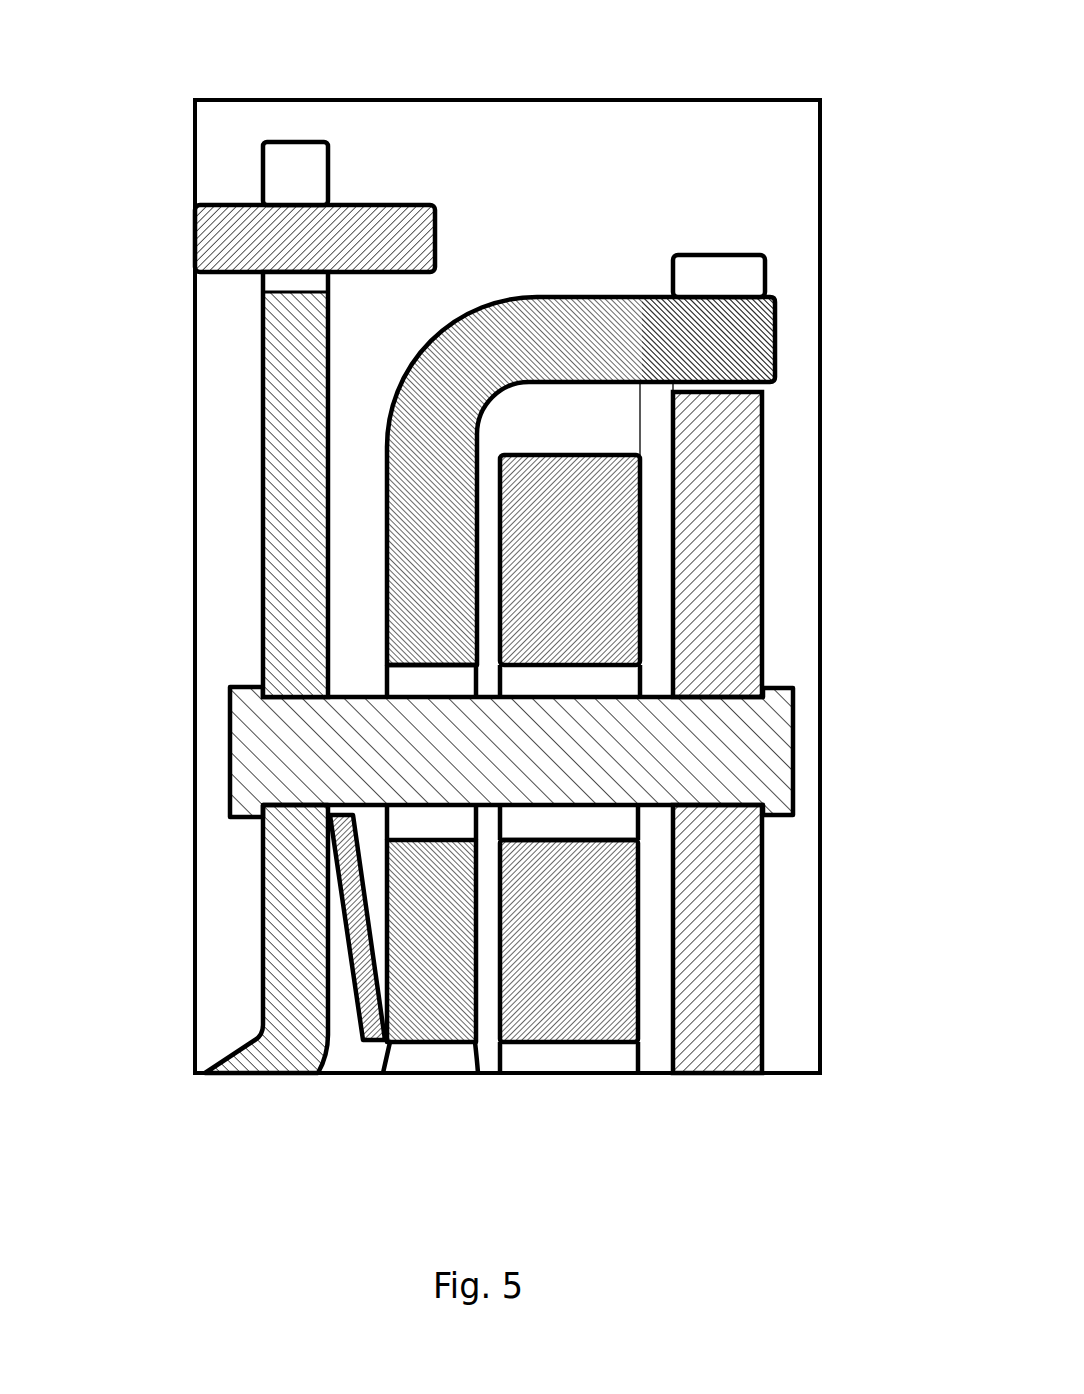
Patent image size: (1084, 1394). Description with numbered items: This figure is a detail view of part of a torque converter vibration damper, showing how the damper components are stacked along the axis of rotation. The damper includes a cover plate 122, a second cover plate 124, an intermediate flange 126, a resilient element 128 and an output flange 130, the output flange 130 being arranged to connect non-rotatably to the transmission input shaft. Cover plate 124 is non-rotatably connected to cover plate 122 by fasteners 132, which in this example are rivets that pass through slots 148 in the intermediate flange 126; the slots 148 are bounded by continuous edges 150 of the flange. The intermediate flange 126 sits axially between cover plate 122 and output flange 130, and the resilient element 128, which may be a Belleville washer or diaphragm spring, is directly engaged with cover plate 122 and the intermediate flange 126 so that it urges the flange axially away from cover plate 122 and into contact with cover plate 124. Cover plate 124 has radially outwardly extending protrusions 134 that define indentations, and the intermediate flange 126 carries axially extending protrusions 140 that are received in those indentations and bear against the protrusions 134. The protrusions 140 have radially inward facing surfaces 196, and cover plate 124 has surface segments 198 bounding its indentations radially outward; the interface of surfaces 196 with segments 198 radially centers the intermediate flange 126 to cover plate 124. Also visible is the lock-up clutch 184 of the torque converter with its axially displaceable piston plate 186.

The cover plate 122 is at (190, 415).
The cover plate 124 is at (721, 242).
The intermediate flange 126 is at (547, 275).
The resilient element 128 is at (343, 955).
The output flange 130 is at (606, 440).
The fasteners 132 is at (232, 752).
The radially outwardly extending protrusions 134 is at (705, 255).
The axially extending protrusions 140 is at (777, 341).
The slots 148 is at (410, 685).
The continuous edges 150 is at (580, 820).
The lock-up clutch 184 is at (226, 207).
The piston plate 186 is at (294, 142).
The surfaces 196 is at (645, 385).
The surface segments 198 is at (731, 400).